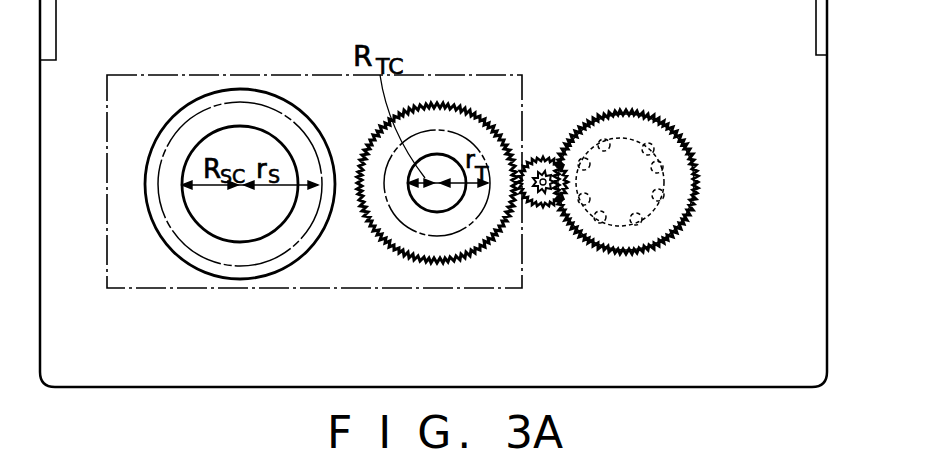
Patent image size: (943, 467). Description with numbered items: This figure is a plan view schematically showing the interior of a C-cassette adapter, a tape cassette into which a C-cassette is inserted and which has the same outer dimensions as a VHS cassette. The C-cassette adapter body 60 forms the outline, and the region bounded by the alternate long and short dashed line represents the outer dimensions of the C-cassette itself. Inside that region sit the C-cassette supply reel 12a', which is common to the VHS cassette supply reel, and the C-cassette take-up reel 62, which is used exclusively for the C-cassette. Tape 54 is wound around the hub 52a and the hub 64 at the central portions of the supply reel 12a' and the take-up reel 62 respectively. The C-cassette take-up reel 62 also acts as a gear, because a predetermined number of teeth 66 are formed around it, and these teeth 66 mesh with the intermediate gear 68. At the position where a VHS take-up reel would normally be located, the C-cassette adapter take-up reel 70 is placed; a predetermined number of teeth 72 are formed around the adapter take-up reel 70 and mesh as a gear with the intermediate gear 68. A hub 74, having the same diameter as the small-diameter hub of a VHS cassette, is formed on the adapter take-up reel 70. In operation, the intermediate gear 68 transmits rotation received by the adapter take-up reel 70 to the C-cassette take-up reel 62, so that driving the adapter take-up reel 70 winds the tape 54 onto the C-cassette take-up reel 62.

The C-cassette adapter body 60 is at (828, 213).
The C-cassette supply reel 12a' is at (240, 217).
The hub 52a is at (287, 152).
The tape 54 is at (393, 248).
The C-cassette take-up reel 62 is at (458, 261).
The hub 64 is at (453, 152).
The teeth 66 is at (405, 230).
The intermediate gear 68 is at (546, 214).
The C-cassette adapter take-up reel 70 is at (677, 132).
The teeth 72 is at (690, 160).
The hub 74 is at (683, 227).